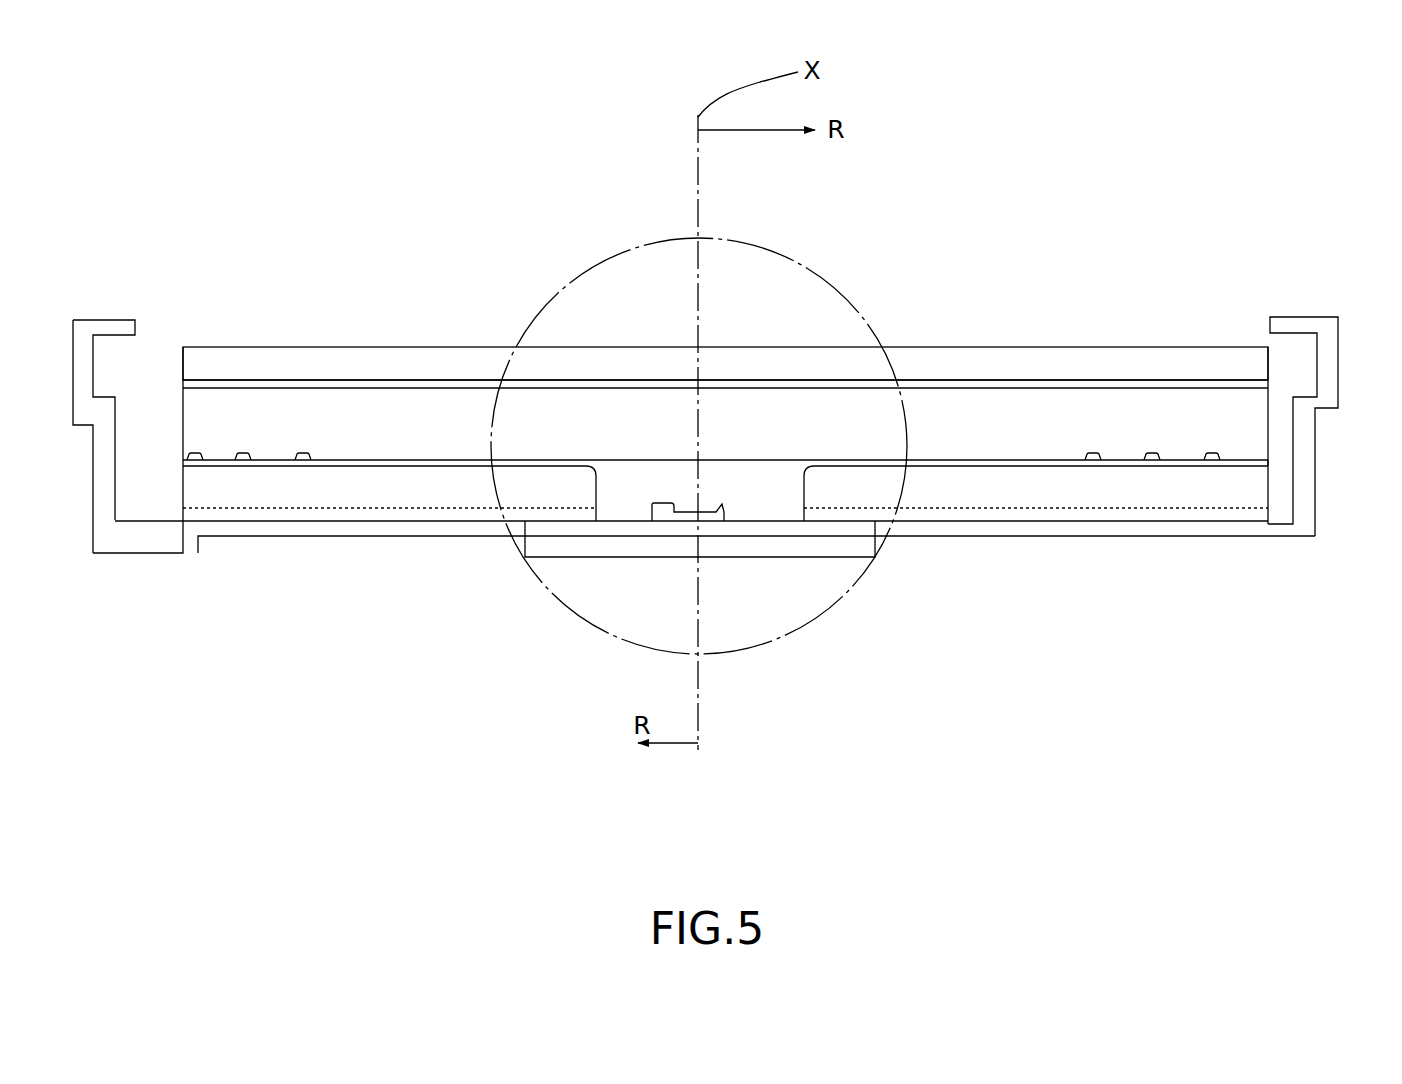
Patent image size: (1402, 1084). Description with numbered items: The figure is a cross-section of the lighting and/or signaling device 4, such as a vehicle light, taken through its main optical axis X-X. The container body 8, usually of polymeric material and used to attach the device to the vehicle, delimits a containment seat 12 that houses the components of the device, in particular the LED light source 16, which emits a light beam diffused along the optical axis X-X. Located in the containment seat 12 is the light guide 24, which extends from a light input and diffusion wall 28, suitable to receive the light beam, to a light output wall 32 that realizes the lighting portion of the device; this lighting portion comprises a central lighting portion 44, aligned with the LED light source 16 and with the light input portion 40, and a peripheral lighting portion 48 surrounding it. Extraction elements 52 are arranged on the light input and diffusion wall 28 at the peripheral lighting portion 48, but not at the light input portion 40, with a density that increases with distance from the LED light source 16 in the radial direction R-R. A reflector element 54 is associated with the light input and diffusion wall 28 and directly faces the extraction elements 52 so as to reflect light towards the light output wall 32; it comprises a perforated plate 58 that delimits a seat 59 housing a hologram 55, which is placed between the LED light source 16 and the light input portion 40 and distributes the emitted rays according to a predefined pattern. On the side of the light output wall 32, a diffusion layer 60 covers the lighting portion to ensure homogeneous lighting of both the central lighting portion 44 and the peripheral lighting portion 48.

The lighting and/or signaling device 4 is at (268, 192).
The container body 8 is at (92, 463).
The containment seat 12 is at (157, 397).
The LED light source 16 is at (693, 522).
The light guide 24 is at (1237, 415).
The light input and diffusion wall 28 is at (1248, 470).
The light output wall 32 is at (1077, 382).
The light input portion 40 is at (631, 477).
The central lighting portion 44 is at (741, 368).
The peripheral lighting portion 48 is at (351, 380).
The extraction elements 52 is at (196, 470).
The reflector element 54 is at (905, 518).
The hologram 55 is at (758, 460).
The plate 58 is at (317, 512).
The seat 59 is at (753, 498).
The diffusion layer 60 is at (435, 363).